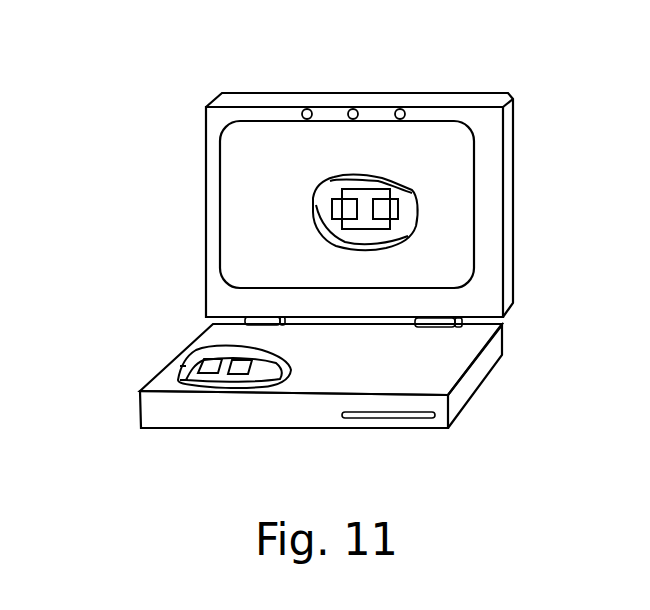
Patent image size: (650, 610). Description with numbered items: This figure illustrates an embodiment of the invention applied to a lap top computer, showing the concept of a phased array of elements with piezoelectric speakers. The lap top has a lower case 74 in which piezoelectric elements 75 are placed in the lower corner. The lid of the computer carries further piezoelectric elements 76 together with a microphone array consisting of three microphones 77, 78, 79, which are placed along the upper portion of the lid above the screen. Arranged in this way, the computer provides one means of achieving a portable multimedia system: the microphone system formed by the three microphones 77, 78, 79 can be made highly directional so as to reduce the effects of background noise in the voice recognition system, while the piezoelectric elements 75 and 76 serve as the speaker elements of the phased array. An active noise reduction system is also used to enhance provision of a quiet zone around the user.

The lower case 74 is at (492, 367).
The piezoelectric elements 75 is at (188, 361).
The piezoelectric elements 76 is at (332, 208).
The microphone 77 is at (309, 108).
The microphone 78 is at (353, 108).
The microphone 79 is at (402, 108).